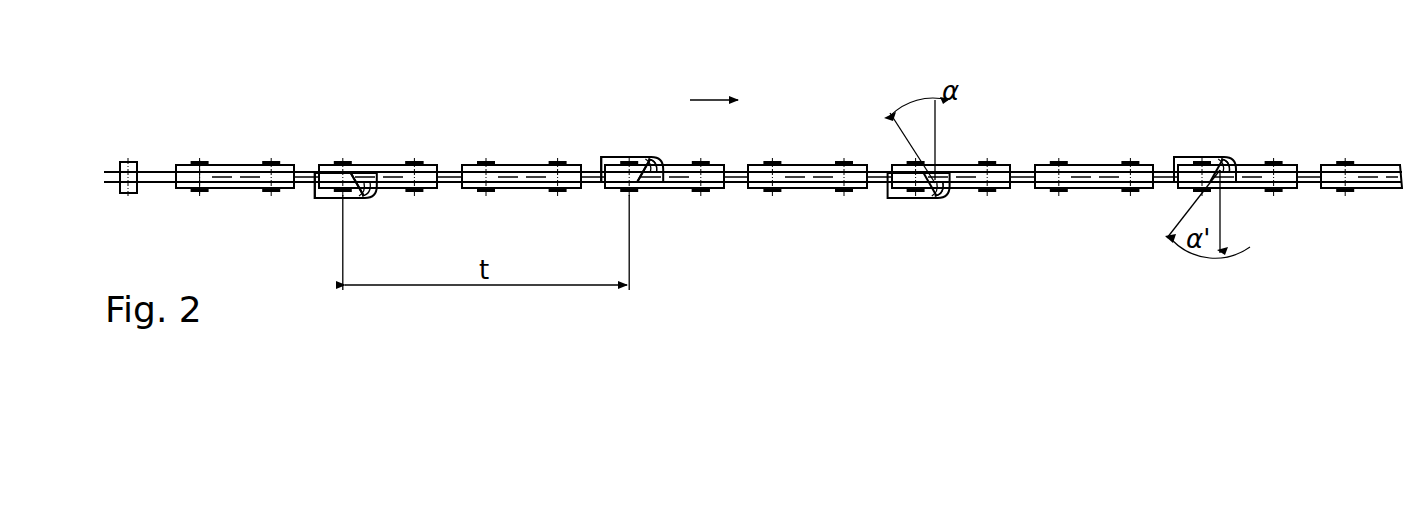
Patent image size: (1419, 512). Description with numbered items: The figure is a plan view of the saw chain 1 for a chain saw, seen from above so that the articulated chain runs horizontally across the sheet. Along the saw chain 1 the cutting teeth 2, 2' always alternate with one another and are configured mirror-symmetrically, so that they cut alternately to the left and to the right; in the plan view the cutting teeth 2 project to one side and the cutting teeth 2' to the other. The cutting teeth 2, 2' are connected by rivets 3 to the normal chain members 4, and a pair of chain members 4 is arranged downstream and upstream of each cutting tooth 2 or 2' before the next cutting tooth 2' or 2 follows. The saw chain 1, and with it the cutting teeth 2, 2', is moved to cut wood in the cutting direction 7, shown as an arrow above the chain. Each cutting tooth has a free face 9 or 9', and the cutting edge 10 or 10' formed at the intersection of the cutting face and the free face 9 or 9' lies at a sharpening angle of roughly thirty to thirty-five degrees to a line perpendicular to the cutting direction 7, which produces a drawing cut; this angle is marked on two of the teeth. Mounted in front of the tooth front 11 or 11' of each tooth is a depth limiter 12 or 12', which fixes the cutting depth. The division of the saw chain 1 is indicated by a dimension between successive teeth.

The saw chain 1 is at (528, 84).
The cutting tooth 2 is at (628, 229).
The cutting tooth 2' is at (918, 129).
The rivet 3 is at (197, 164).
The chain member 4 is at (228, 164).
The cutting direction 7 is at (717, 99).
The free face 9 is at (327, 137).
The free face 9' is at (617, 129).
The cutting edge 10 is at (373, 136).
The cutting edge 10' is at (666, 222).
The tooth front 11 is at (978, 137).
The tooth front 11' is at (978, 180).
The depth limiter 12 is at (429, 120).
The depth limiter 12' is at (729, 237).